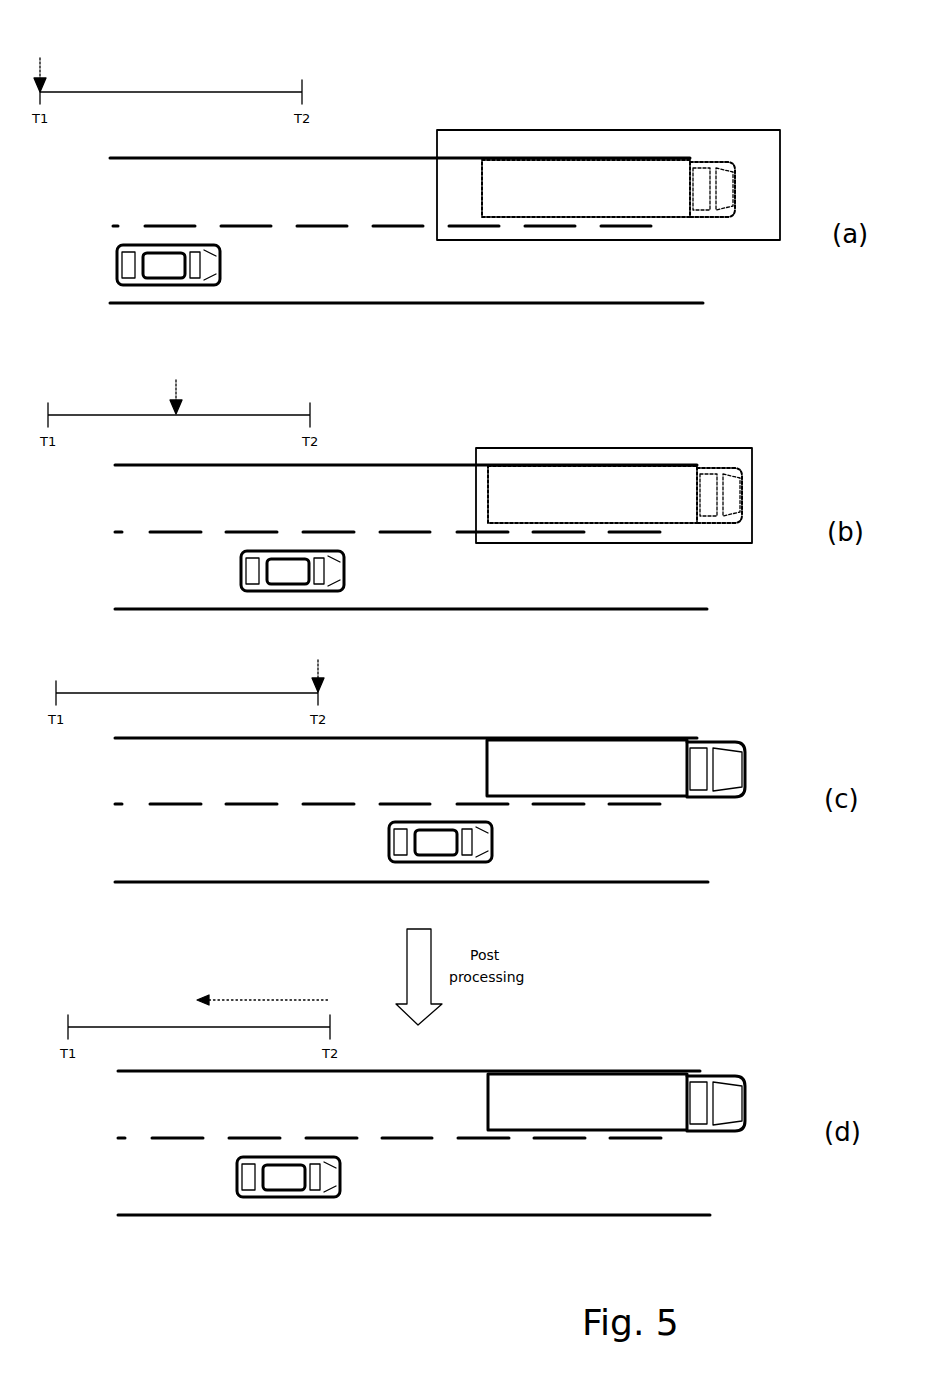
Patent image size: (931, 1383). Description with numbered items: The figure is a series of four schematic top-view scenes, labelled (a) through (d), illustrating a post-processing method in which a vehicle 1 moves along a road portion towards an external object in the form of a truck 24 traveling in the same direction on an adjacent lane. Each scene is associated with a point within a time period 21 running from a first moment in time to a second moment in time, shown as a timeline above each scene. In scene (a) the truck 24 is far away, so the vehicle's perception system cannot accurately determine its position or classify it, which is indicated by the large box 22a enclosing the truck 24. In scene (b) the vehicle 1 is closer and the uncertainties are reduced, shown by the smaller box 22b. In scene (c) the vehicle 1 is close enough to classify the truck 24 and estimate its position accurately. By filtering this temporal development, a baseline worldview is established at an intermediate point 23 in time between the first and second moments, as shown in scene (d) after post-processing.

The vehicle 1 is at (150, 286).
The time period 21 is at (240, 74).
The box 22a is at (652, 130).
The box 22b is at (648, 448).
The intermediate point in time 23 is at (188, 1012).
The truck 24 is at (732, 185).